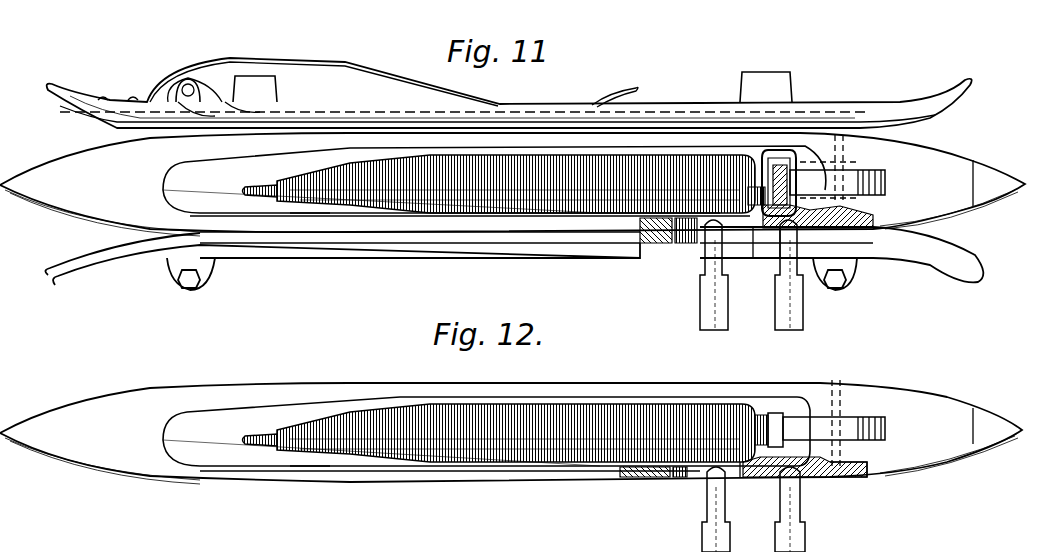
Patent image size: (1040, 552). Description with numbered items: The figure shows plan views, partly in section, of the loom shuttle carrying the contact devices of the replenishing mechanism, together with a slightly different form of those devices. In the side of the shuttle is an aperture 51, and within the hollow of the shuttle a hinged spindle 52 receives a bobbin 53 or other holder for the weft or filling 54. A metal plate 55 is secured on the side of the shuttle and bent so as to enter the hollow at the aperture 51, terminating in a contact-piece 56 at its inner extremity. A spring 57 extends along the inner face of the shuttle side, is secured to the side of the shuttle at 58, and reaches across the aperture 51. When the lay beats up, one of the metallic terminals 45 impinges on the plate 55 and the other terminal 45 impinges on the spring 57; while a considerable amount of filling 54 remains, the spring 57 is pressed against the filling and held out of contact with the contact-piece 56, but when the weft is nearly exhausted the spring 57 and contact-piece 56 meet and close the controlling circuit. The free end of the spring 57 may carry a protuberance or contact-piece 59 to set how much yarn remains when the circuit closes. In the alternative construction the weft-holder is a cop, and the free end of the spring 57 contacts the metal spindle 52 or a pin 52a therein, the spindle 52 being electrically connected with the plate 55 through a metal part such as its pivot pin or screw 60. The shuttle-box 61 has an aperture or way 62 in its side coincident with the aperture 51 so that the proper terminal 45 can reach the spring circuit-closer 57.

In FIG. 11, the metallic terminals 45 is at (703, 302).
In FIG. 12, the metallic terminals 45 is at (808, 546).
In FIG. 11, the aperture 51 is at (694, 222).
In FIG. 12, the aperture 51 is at (682, 480).
In FIG. 11, the hinged spindle 52 is at (258, 186).
In FIG. 12, the hinged spindle 52 is at (782, 428).
In FIG. 12, the pin 52a is at (775, 415).
In FIG. 11, the bobbin 53 is at (811, 175).
In FIG. 11, the weft or filling 54 is at (607, 155).
In FIG. 12, the weft or filling 54 is at (585, 405).
In FIG. 11, the metal plate 55 is at (815, 229).
In FIG. 12, the metal plate 55 is at (815, 478).
In FIG. 11, the contact-piece 56 is at (790, 192).
In FIG. 11, the spring 57 is at (498, 218).
In FIG. 12, the spring 57 is at (517, 472).
In FIG. 11, the securing point of the spring 58 is at (312, 220).
In FIG. 12, the securing point of the spring 58 is at (312, 470).
In FIG. 12, the protuberance or contact-piece 59 is at (740, 478).
In FIG. 12, the pivot pin or screw 60 is at (858, 462).
In FIG. 11, the shuttle-box 61 is at (350, 112).
In FIG. 11, the aperture or way 62 is at (775, 240).